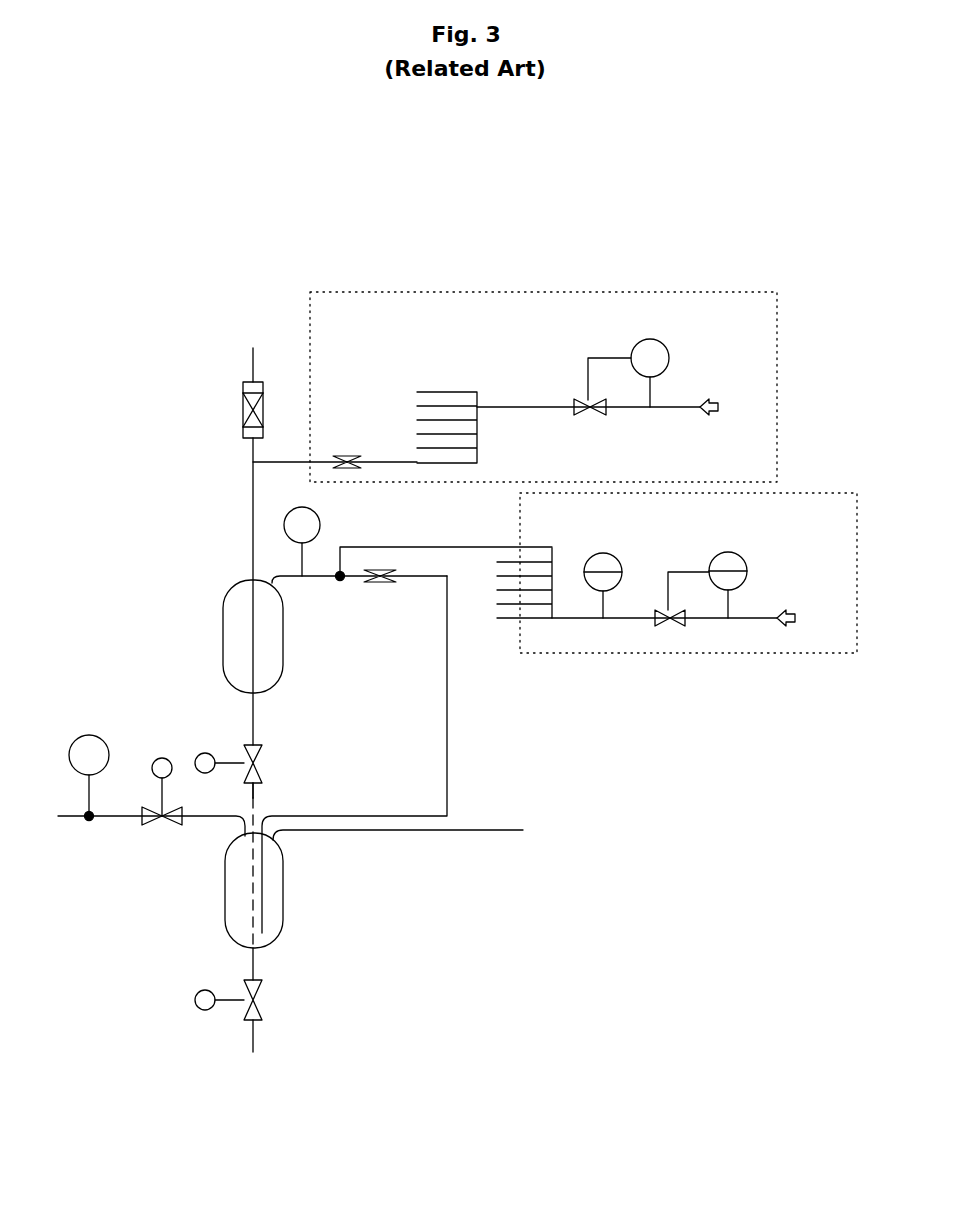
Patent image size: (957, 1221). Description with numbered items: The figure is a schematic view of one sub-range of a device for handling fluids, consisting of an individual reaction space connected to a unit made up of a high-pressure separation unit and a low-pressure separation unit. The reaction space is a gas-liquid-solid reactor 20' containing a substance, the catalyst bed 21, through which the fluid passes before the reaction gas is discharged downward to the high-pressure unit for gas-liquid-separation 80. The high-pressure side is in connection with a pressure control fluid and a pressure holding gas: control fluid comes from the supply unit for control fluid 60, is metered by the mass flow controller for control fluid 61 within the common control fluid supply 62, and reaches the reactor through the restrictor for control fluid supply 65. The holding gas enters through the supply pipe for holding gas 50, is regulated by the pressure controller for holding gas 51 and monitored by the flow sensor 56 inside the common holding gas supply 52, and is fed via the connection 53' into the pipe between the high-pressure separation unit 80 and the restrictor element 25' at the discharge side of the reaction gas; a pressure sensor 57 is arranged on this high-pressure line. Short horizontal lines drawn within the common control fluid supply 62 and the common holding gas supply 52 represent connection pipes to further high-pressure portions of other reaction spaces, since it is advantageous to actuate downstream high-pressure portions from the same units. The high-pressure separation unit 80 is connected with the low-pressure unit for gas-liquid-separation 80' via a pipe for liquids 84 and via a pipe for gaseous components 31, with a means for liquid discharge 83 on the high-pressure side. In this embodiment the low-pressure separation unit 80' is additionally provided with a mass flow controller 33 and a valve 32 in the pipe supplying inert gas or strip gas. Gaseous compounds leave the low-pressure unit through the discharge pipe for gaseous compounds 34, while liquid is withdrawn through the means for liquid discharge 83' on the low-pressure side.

The gas-liquid-solid reactor 20' is at (185, 395).
The catalyst bed 21 is at (247, 423).
The restrictor for control fluid supply 65 is at (347, 462).
The common control fluid supply 62 is at (428, 292).
The mass flow controller for control fluid 61 is at (640, 345).
The supply unit for control fluid 60 is at (713, 400).
The unit for gas-liquid-separation (high-pressure side) 80 is at (195, 636).
The pipe for gaseous components 31 is at (447, 758).
The pressure sensor 57 is at (320, 525).
The connection (holding gas supply—reaction gas discharge) 53' is at (446, 538).
The restrictor at the discharge side of the reaction gas 25' is at (397, 600).
The common holding gas supply 52 is at (690, 655).
The flow sensor 56 is at (600, 553).
The pressure controller for holding gas 51 is at (712, 560).
The supply pipe for holding gas 50 is at (790, 610).
The mass flow controller 33 is at (82, 750).
The valve in pipe to the low-pressure separation unit 32 is at (140, 822).
The means for liquid discharge (high-pressure side) 83 is at (205, 749).
The pipe for liquids 84 is at (255, 808).
The unit for gas-liquid-separation (low-pressure side) 80' is at (195, 890).
The discharge pipe for gaseous compounds 34 is at (487, 830).
The means for liquid discharge (low-pressure side) 83' is at (185, 986).